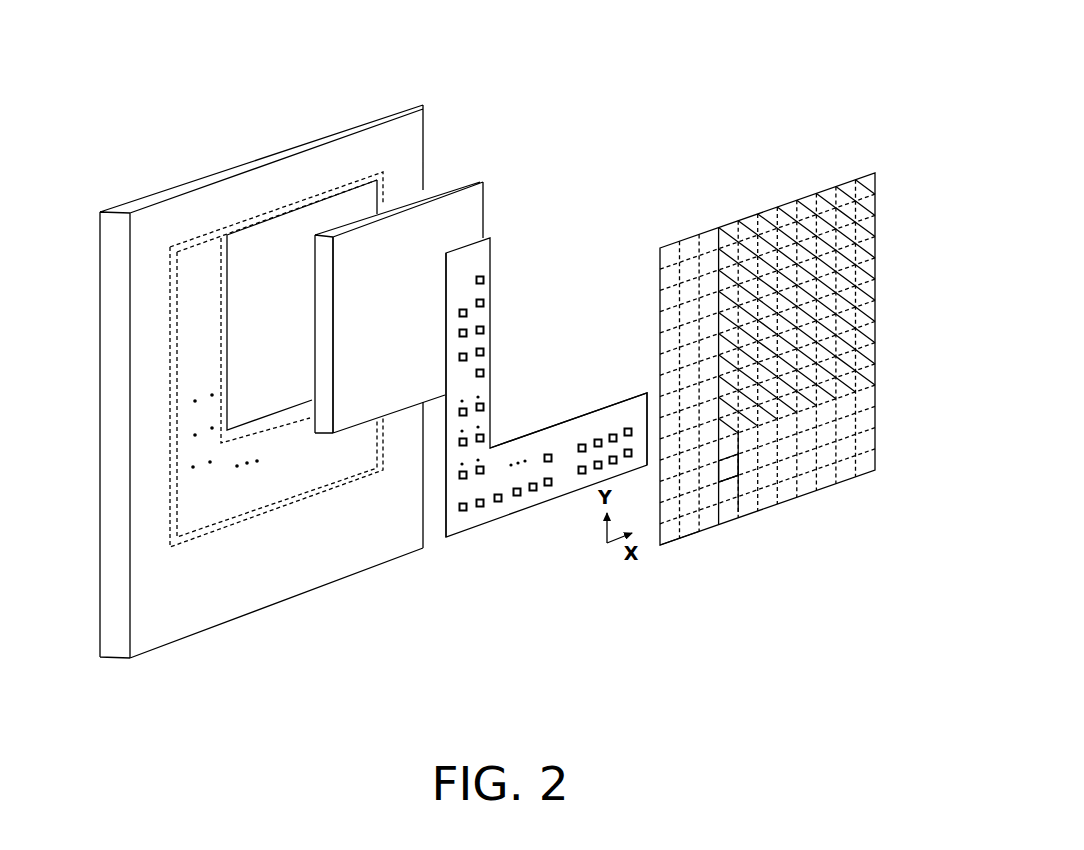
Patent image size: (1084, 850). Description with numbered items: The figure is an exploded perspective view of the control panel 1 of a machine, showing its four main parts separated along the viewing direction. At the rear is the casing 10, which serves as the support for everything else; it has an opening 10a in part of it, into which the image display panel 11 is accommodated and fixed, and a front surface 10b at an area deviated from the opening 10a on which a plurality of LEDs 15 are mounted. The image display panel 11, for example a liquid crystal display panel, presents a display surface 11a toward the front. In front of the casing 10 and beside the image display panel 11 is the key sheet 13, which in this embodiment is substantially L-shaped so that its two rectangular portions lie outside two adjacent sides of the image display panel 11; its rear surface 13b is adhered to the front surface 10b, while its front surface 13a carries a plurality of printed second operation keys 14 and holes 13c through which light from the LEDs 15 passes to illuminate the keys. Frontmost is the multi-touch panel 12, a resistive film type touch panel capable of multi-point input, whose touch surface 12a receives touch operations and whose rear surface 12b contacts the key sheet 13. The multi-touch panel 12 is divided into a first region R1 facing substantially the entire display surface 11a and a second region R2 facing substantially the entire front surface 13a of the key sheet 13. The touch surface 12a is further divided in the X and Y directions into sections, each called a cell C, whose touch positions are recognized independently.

The control panel 1 is at (456, 48).
The casing 10 is at (247, 162).
The opening 10a is at (356, 196).
The front surface 10b is at (287, 578).
The image display panel 11 is at (492, 182).
The display surface 11a is at (460, 218).
The multi-touch panel 12 is at (880, 172).
The touch surface 12a is at (693, 505).
The rear surface 12b is at (655, 543).
The key sheet 13 is at (495, 298).
The front surface 13a is at (567, 424).
The rear surface 13b is at (446, 516).
The holes 13c is at (502, 468).
The second operation keys 14 is at (581, 474).
The LEDs 15 is at (225, 468).
The first region R1 is at (855, 253).
The second region R2 is at (847, 449).
The cell C is at (745, 472).